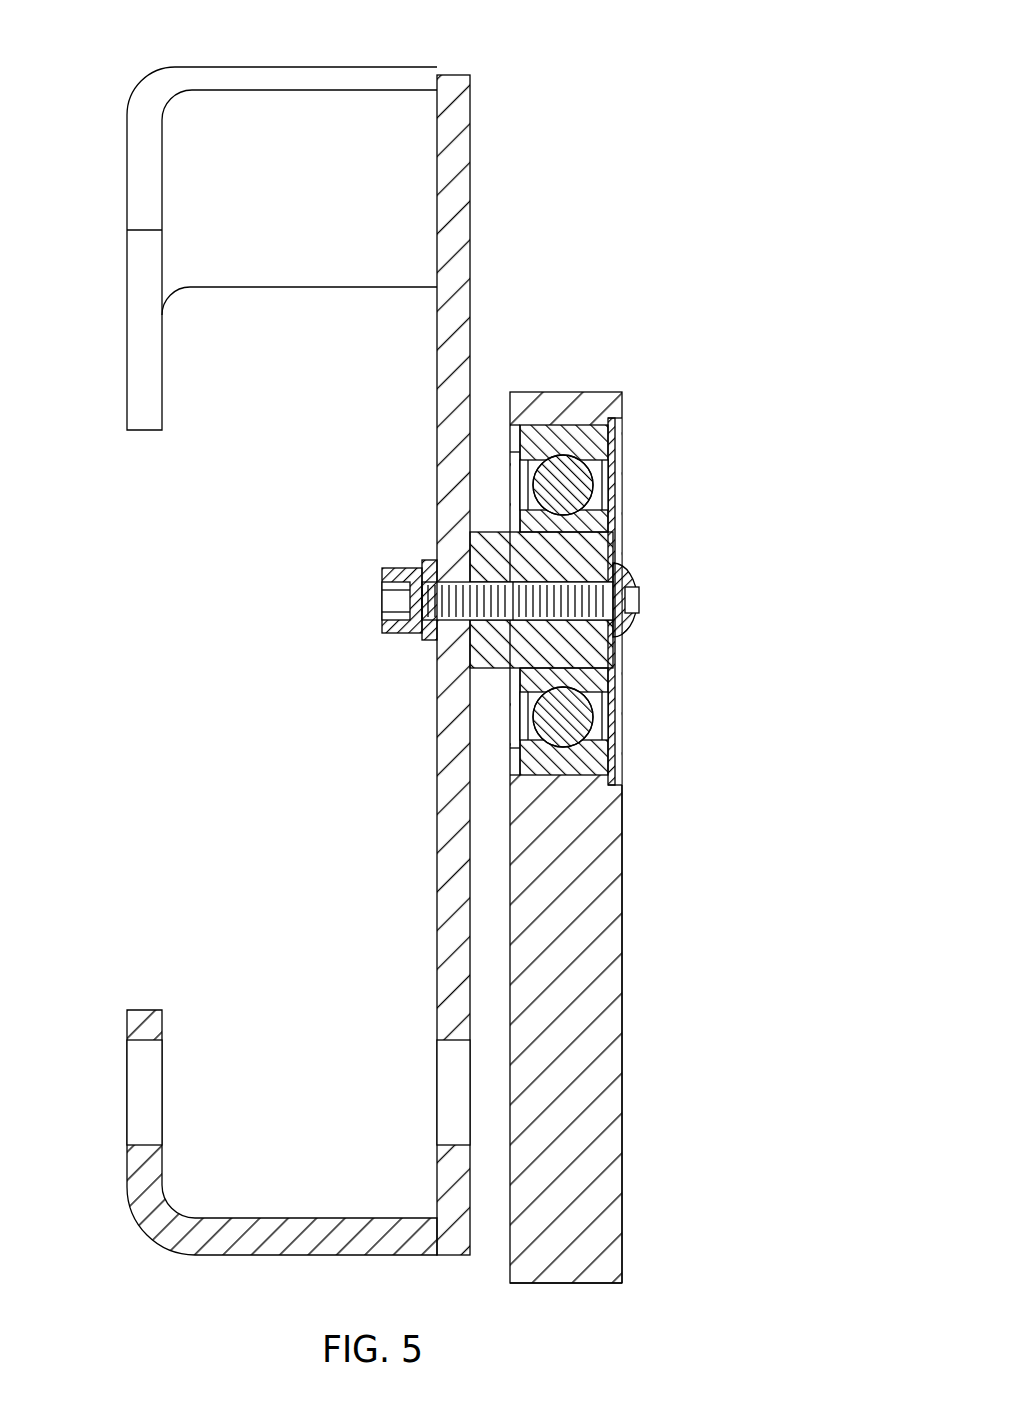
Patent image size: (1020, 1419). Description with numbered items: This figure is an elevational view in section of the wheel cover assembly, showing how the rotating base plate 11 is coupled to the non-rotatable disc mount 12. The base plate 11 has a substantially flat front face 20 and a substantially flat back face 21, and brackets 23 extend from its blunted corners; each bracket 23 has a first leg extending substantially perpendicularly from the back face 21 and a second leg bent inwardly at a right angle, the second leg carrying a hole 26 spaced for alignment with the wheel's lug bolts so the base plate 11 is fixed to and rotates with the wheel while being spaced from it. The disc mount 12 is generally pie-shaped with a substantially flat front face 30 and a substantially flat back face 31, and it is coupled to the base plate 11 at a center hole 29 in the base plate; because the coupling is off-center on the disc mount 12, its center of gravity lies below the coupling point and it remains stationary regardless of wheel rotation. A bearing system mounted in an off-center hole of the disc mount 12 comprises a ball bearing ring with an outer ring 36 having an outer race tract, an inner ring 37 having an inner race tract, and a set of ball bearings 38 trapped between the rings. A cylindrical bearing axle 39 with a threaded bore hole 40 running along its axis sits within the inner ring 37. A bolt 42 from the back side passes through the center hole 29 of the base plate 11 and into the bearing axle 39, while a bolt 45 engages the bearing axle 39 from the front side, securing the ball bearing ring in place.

The base plate 11 is at (303, 658).
The disc mount 12 is at (572, 840).
The front face 20 is at (472, 250).
The back face 21 is at (435, 330).
The bracket 23 is at (230, 67).
The hole 26 is at (140, 1146).
The center hole 29 is at (452, 578).
The front face 30 is at (622, 1076).
The back face 31 is at (503, 1253).
The outer ring 36 is at (600, 752).
The inner ring 37 is at (599, 725).
The ball bearings 38 is at (590, 714).
The bearing axle 39 is at (600, 538).
The threaded bore hole 40 is at (564, 636).
The bolt 42 is at (384, 603).
The bolt 45 is at (640, 582).